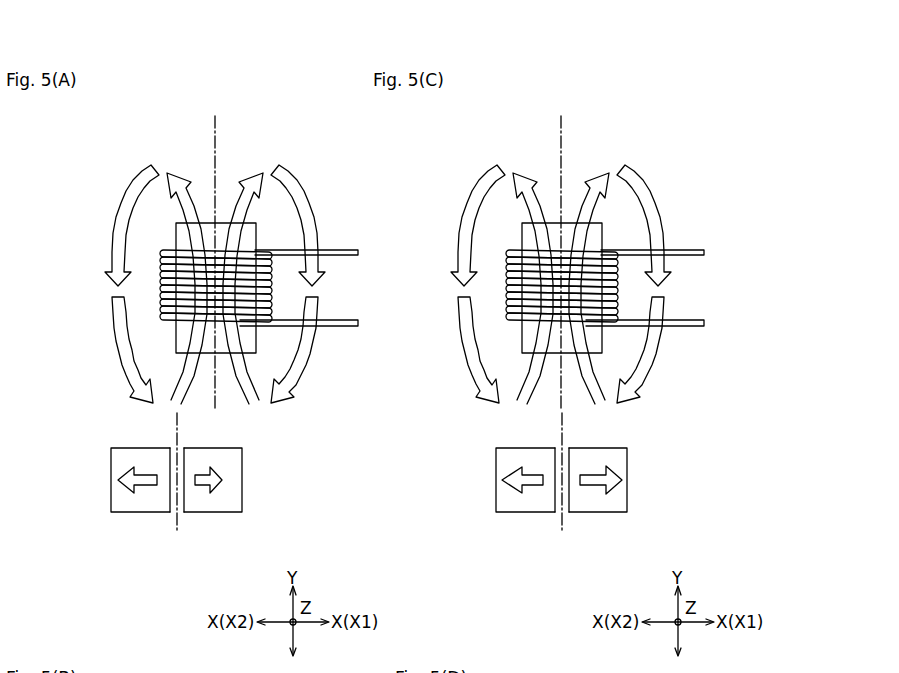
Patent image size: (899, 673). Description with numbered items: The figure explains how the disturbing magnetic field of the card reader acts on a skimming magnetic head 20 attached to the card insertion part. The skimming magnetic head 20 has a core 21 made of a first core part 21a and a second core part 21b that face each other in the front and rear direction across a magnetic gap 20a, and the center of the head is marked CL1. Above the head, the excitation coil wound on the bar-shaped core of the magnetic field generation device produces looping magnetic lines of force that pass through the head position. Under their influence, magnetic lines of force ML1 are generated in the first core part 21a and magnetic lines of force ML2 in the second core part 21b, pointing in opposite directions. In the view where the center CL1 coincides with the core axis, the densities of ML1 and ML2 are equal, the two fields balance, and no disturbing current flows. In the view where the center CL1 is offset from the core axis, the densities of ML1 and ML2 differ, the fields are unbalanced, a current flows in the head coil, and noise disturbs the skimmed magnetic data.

In FIG. 5A, the skimming magnetic head 20 is at (163, 527).
In FIG. 5C, the skimming magnetic head 20 is at (548, 527).
In FIG. 5A, the magnetic gap 20a is at (179, 515).
In FIG. 5C, the magnetic gap 20a is at (573, 527).
In FIG. 5A, the core 21 is at (163, 480).
In FIG. 5C, the core 21 is at (548, 480).
In FIG. 5A, the first core part 21a is at (111, 497).
In FIG. 5C, the first core part 21a is at (482, 480).
In FIG. 5A, the second core part 21b is at (242, 482).
In FIG. 5C, the second core part 21b is at (628, 480).
In FIG. 5A, the center CL1 is at (179, 428).
In FIG. 5C, the center CL1 is at (598, 473).
In FIG. 5A, the magnetic lines of force ML1 is at (148, 490).
In FIG. 5C, the magnetic lines of force ML1 is at (526, 515).
In FIG. 5A, the magnetic lines of force ML2 is at (205, 490).
In FIG. 5C, the magnetic lines of force ML2 is at (600, 515).